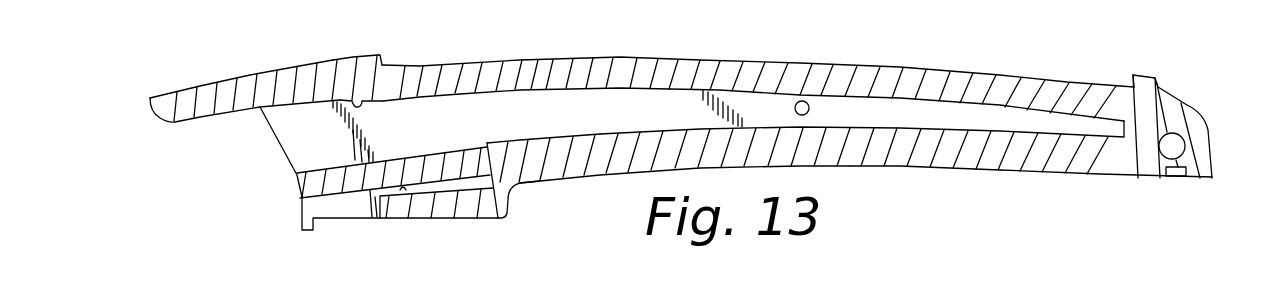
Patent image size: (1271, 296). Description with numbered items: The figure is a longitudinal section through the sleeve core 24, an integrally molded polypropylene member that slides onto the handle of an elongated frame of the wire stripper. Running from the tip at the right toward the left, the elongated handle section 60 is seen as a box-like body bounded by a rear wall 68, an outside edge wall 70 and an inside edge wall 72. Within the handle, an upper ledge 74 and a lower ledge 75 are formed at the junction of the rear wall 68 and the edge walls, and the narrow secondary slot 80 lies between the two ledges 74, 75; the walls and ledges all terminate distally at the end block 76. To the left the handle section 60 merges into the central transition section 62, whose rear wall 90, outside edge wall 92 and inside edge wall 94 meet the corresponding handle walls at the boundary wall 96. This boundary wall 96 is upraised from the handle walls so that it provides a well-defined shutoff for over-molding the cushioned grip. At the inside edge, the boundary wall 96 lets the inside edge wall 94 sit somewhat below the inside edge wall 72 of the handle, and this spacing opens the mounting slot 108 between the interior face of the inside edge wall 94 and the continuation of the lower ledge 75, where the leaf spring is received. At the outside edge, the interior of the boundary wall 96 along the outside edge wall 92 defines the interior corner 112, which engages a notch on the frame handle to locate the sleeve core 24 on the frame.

The sleeve core 24 is at (1003, 175).
The handle section 60 is at (911, 173).
The transition section 62 is at (303, 258).
The rear wall 68 is at (670, 100).
The outside edge wall 70 is at (842, 60).
The inside edge wall 72 is at (845, 172).
The upper ledge 74 is at (580, 67).
The lower ledge 75 is at (395, 168).
The end block 76 is at (1190, 114).
The secondary slot 80 is at (963, 108).
The rear wall 90 is at (298, 133).
The outside edge wall 92 is at (225, 78).
The inside edge wall 94 is at (450, 207).
The boundary wall 96 is at (382, 63).
The mounting slot 108 is at (404, 193).
The interior corner 112 is at (353, 100).